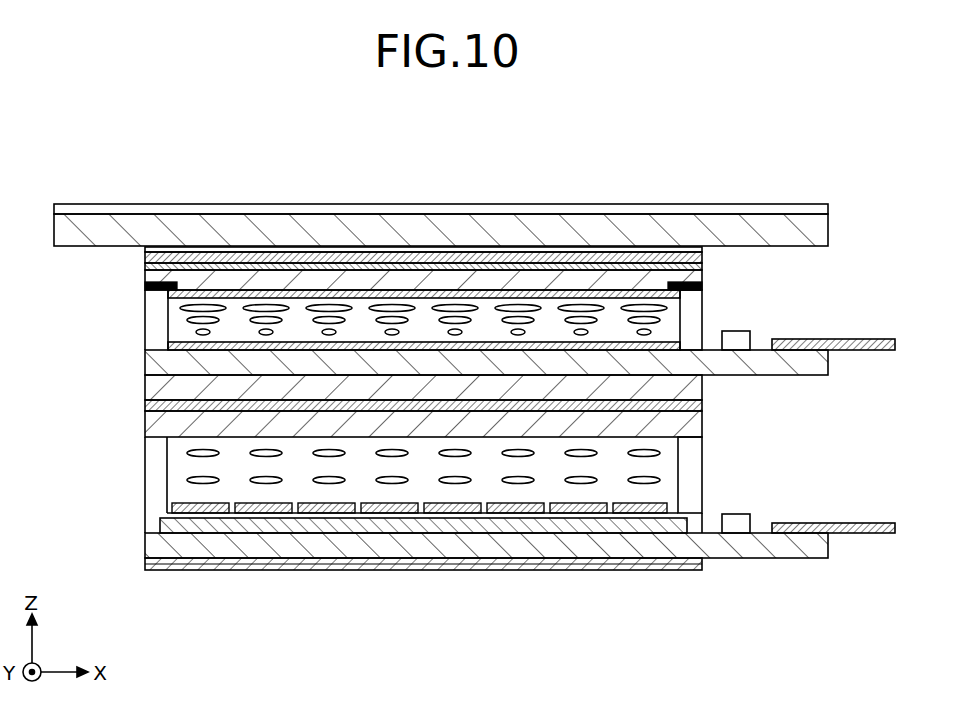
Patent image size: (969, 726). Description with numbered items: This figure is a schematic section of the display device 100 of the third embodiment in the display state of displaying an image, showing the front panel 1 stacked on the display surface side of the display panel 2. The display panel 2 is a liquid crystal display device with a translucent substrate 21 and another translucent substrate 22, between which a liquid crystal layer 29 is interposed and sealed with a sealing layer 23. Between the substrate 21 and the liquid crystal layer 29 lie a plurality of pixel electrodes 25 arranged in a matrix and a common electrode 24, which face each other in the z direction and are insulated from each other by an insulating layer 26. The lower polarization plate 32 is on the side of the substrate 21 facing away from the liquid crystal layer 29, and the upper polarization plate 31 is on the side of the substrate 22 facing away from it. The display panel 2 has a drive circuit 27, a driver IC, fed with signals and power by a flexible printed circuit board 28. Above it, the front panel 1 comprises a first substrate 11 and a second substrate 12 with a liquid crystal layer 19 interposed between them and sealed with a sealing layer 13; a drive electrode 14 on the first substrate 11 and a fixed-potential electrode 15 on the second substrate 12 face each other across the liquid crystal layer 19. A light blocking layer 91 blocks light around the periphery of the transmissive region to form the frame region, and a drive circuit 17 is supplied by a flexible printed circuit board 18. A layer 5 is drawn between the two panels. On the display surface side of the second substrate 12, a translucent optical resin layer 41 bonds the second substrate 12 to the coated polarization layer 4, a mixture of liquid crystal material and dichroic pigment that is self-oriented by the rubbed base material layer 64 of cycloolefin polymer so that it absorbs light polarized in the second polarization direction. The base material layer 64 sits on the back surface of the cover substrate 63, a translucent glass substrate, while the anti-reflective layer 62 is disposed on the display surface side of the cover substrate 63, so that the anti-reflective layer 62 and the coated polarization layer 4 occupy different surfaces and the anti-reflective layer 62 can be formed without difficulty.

The display device 100 is at (250, 163).
The front panel 1 is at (830, 280).
The display panel 2 is at (782, 445).
The coated polarization layer 4 is at (143, 258).
The translucent optical resin layer 41 is at (143, 267).
The adhesive layer 5 is at (153, 387).
The first substrate 11 is at (157, 362).
The second substrate 12 is at (150, 278).
The sealing layer 13 is at (695, 313).
The drive electrode 14 is at (172, 340).
The fixed-potential electrode 15 is at (168, 307).
The drive circuit 17 is at (740, 343).
The flexible printed circuit board 18 is at (867, 340).
The liquid crystal layer 19 is at (182, 323).
The translucent substrate 21 is at (182, 565).
The translucent substrate 22 is at (153, 422).
The sealing layer 23 is at (695, 468).
The common electrode 24 is at (182, 547).
The pixel electrodes 25 is at (172, 500).
The insulating layer 26 is at (153, 523).
The drive circuit 27 is at (740, 527).
The flexible printed circuit board 28 is at (867, 525).
The liquid crystal layer 29 is at (182, 460).
The upper polarization plate 31 is at (150, 403).
The lower polarization plate 32 is at (208, 565).
The anti-reflective layer 62 is at (757, 212).
The cover substrate 63 is at (810, 232).
The base material layer 64 is at (702, 252).
The light blocking layer 91 is at (160, 282).